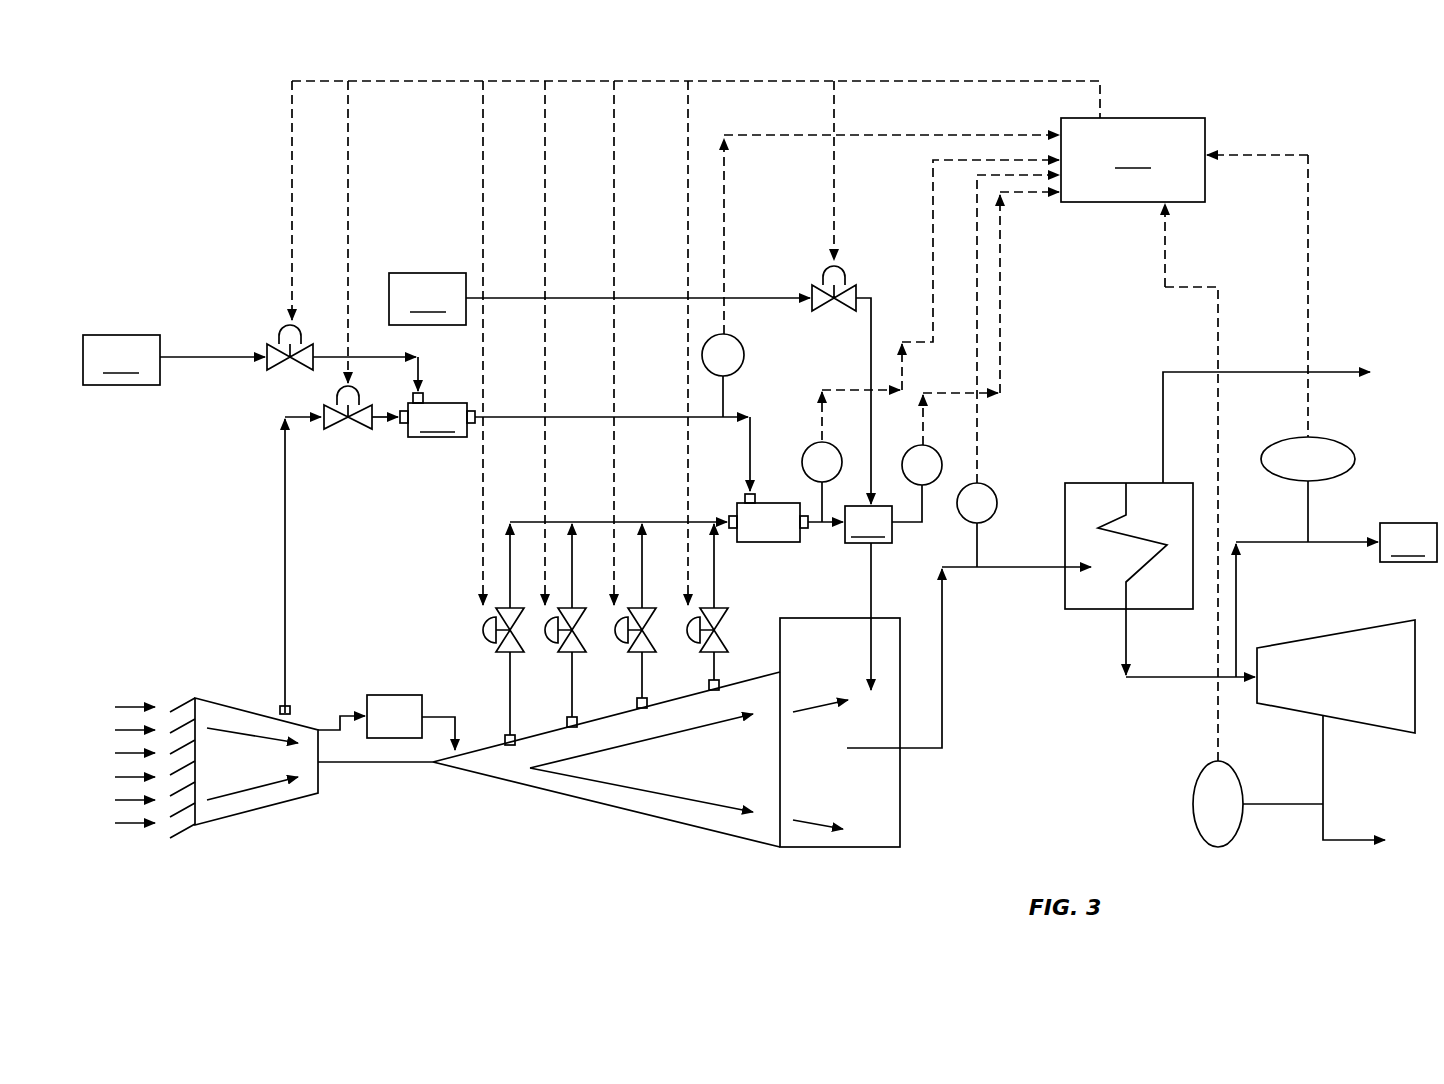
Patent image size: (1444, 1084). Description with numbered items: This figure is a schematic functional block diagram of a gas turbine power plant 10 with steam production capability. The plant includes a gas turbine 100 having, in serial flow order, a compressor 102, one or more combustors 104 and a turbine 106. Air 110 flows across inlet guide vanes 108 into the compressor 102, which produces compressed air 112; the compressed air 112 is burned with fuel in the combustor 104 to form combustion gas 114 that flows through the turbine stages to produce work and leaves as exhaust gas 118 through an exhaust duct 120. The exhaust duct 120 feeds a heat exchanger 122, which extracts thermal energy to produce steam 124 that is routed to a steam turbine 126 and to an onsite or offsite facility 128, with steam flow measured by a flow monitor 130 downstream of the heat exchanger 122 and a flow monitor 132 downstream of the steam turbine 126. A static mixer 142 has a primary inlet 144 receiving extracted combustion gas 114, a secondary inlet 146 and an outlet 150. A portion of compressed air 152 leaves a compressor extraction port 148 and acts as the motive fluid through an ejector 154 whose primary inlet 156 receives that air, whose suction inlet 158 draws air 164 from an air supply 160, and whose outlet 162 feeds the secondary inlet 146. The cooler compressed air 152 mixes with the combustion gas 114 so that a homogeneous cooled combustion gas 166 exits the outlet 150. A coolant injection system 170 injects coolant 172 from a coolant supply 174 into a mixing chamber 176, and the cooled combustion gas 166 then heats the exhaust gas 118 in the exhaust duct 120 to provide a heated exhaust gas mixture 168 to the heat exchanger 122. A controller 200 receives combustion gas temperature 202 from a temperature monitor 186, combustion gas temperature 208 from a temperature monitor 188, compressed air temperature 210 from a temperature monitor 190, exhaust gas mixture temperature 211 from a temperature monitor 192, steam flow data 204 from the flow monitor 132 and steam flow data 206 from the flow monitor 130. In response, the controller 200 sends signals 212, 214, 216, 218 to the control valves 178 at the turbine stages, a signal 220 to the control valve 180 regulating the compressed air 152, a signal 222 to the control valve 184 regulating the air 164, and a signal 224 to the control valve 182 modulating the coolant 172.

The gas turbine power plant 10 is at (243, 216).
The gas turbine 100 is at (348, 845).
The compressor 102 is at (232, 703).
The combustor 104 is at (392, 695).
The turbine 106 is at (595, 800).
The inlet guide vanes 108 is at (196, 830).
The air 110 is at (122, 775).
The compressed air 112 is at (272, 778).
The combustion gas 114 is at (508, 700).
The exhaust gas 118 is at (812, 702).
The exhaust duct 120 is at (822, 850).
The heat exchanger 122 is at (1088, 612).
The steam 124 is at (1250, 542).
The steam turbine 126 is at (1365, 625).
The onsite or offsite facility 128 is at (1408, 542).
The flow monitor 130 is at (1345, 478).
The flow monitor 132 is at (1192, 813).
The static mixer 142 is at (768, 522).
The primary inlet 144 is at (735, 508).
The secondary inlet 146 is at (757, 498).
The compressor extraction port 148 is at (290, 705).
The outlet 150 is at (808, 530).
The compressed air 152 is at (286, 535).
The ejector 154 is at (437, 420).
The primary inlet 156 is at (392, 420).
The suction inlet 158 is at (425, 397).
The air supply 160 is at (121, 360).
The outlet 162 is at (472, 435).
The air 164 is at (206, 356).
The cooled combustion gas 166 is at (843, 527).
The heated exhaust gas mixture 168 is at (944, 645).
The coolant injection system 170 is at (448, 260).
The coolant 172 is at (572, 298).
The coolant supply 174 is at (427, 299).
The mixing chamber 176 is at (868, 524).
The control valves 178 is at (496, 612).
The control valve 180 is at (334, 428).
The control valve 182 is at (850, 285).
The control valve 184 is at (278, 364).
The temperature monitor 186 is at (835, 445).
The temperature monitor 188 is at (940, 455).
The temperature monitor 190 is at (740, 340).
The temperature monitor 192 is at (990, 487).
The controller 200 is at (748, 141).
The combustion gas temperature 202 is at (933, 215).
The steam flow data 204 is at (1165, 238).
The steam flow data 206 is at (1310, 215).
The combustion gas temperature 208 is at (1000, 262).
The compressed air temperature 210 is at (728, 170).
The exhaust gas mixture temperature 211 is at (977, 258).
The signal 212 is at (483, 142).
The signal 214 is at (545, 142).
The signal 216 is at (614, 142).
The signal 218 is at (688, 142).
The signal 220 is at (350, 190).
The signal 222 is at (290, 118).
The signal 224 is at (836, 157).